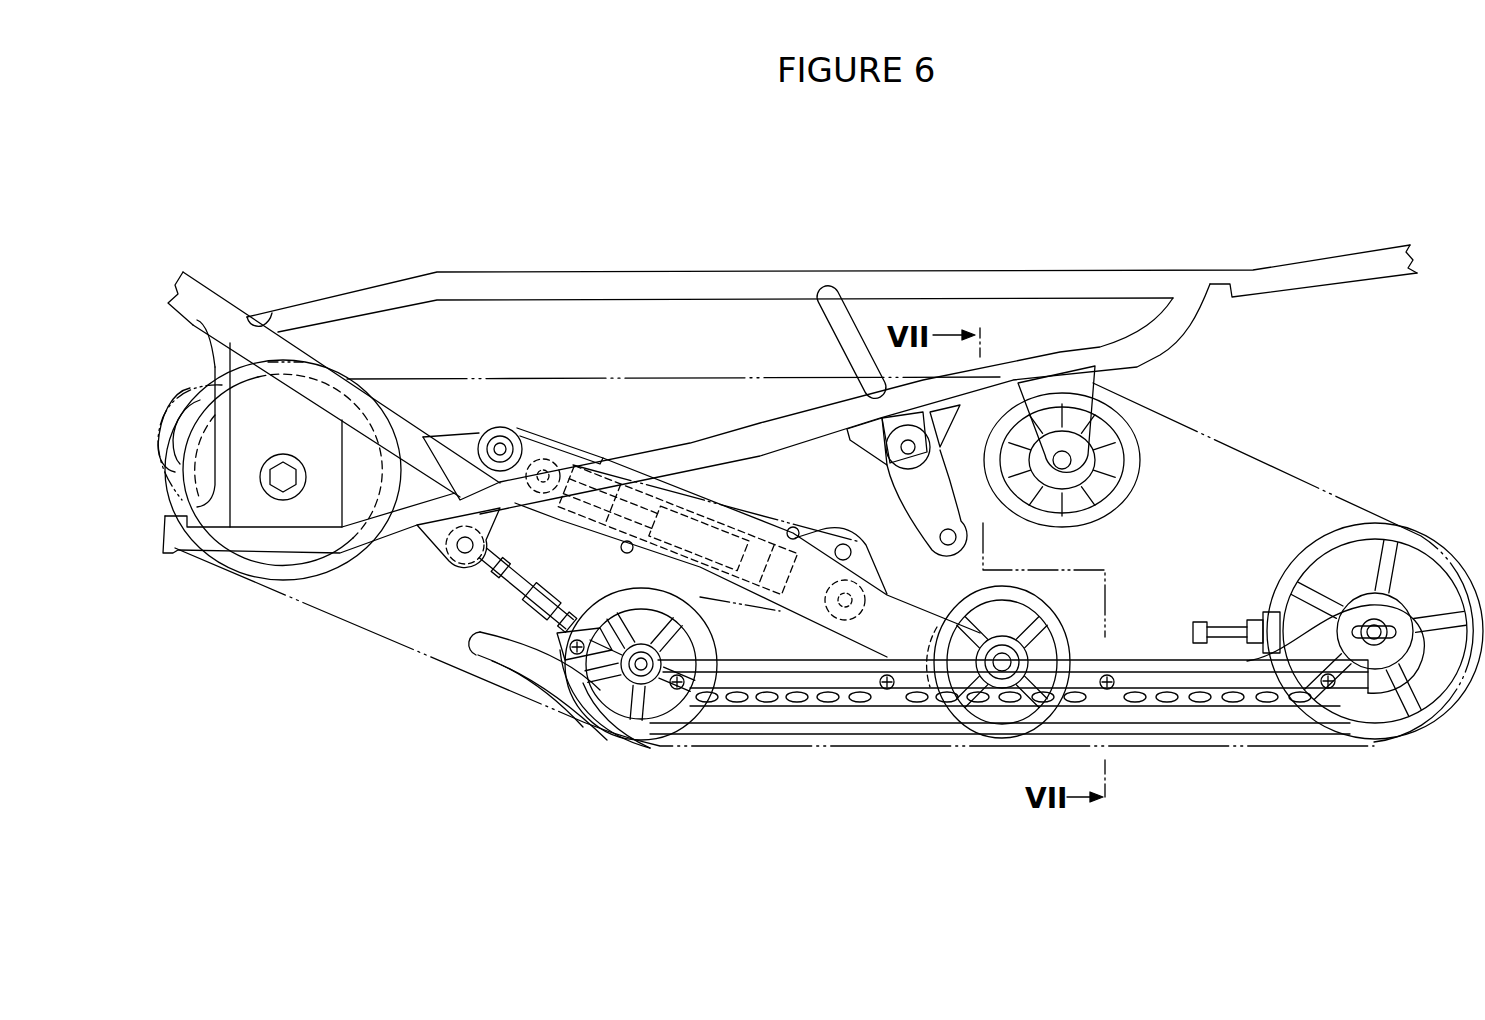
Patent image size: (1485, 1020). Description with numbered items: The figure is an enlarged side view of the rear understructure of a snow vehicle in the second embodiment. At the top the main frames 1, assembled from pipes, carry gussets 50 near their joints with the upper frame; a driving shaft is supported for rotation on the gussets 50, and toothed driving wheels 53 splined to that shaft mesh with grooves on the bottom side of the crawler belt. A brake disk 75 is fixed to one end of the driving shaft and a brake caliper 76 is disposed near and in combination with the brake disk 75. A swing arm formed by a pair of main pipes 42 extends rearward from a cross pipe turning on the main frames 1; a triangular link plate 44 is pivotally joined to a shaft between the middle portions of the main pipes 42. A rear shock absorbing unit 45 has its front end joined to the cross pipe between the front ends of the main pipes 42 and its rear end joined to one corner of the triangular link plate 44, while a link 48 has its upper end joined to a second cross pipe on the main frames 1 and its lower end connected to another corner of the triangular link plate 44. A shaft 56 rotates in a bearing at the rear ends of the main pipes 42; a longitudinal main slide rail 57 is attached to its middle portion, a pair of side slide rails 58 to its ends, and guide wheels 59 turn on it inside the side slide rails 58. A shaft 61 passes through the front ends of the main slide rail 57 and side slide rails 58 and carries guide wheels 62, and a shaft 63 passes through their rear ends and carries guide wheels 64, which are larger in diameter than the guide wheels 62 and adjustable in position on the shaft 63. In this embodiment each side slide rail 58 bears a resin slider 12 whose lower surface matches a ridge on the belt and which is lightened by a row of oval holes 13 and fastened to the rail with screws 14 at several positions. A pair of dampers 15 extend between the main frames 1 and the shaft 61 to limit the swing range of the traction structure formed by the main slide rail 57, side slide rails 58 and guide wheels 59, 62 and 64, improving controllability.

The main frame 1 is at (180, 540).
The slider 12 is at (893, 700).
The oval holes 13 is at (740, 703).
The screws 14 is at (1113, 667).
The dampers 15 is at (568, 612).
The main pipes 42 is at (822, 640).
The triangular link plate 44 is at (885, 507).
The rear shock absorbing unit 45 is at (688, 520).
The link 48 is at (970, 500).
The gussets 50 is at (262, 378).
The toothed driving wheels 53 is at (302, 573).
The shaft 56 is at (972, 705).
The main slide rail 57 is at (527, 663).
The side slide rails 58 is at (1208, 673).
The guide wheels 59 is at (1024, 748).
The shaft 61 is at (637, 670).
The guide wheels 62 is at (583, 700).
The shaft 63 is at (1367, 645).
The guide wheels 64 is at (1418, 722).
The brake disk 75 is at (303, 362).
The brake caliper 76 is at (173, 403).